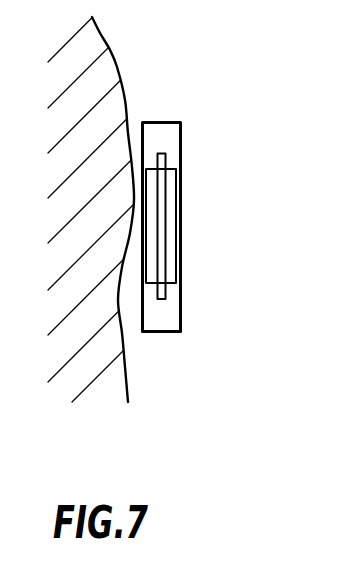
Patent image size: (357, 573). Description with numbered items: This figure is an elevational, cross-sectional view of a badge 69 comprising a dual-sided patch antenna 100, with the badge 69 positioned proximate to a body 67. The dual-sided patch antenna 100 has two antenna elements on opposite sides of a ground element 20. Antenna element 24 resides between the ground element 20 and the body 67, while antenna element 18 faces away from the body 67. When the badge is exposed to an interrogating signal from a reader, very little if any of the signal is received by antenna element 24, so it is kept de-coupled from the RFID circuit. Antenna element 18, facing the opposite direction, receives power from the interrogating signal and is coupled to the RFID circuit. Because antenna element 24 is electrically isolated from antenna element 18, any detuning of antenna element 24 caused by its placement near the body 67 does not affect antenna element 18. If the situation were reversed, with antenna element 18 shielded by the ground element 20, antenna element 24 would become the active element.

The body 67 is at (108, 66).
The antenna element 24 is at (148, 156).
The ground element 20 is at (161, 153).
The antenna element 18 is at (172, 179).
The dual-sided patch antenna 100 is at (200, 218).
The badge 69 is at (182, 302).